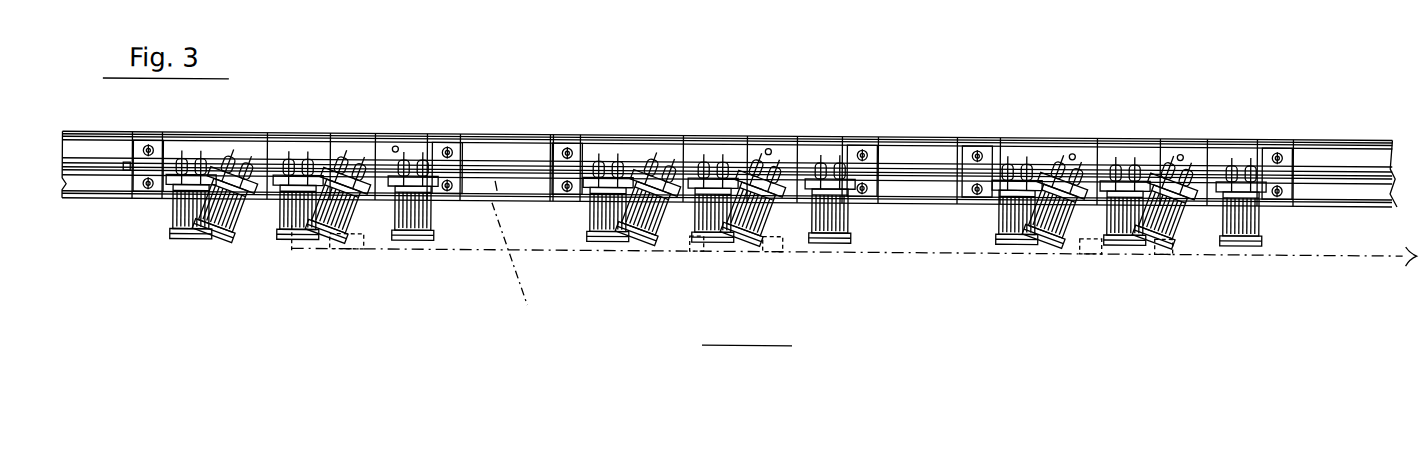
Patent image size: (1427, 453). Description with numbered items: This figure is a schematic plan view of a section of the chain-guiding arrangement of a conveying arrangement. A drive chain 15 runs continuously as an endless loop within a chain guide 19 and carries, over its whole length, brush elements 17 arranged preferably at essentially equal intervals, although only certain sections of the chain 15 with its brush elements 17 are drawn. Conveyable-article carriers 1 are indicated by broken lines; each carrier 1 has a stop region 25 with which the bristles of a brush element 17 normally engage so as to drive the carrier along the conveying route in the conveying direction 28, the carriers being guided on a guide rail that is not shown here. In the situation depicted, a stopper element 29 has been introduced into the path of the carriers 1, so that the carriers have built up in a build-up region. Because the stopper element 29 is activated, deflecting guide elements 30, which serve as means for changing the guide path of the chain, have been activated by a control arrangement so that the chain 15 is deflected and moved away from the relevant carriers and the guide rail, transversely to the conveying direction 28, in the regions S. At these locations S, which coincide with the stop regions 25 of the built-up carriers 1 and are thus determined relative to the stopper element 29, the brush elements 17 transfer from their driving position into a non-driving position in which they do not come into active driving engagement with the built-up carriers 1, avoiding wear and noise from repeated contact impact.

The conveyable-article carrier 1 is at (612, 248).
The drive chain 15 is at (558, 197).
The brush element 17 is at (449, 231).
The chain guide 19 is at (1322, 181).
The stop region 25 is at (361, 249).
The conveying direction 28 is at (745, 345).
The stopper element 29 is at (292, 250).
The deflecting guide element 30 is at (424, 122).
The location of deflection S is at (332, 272).